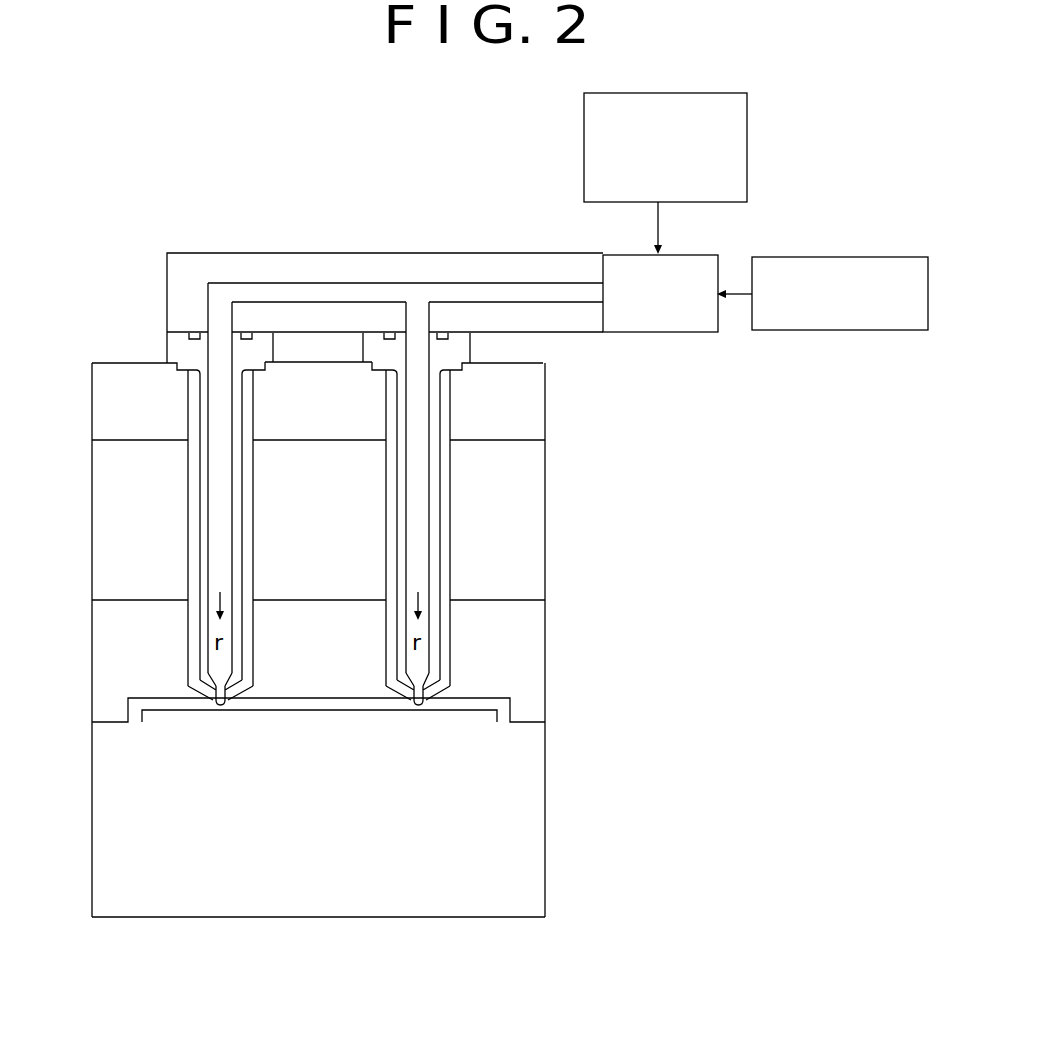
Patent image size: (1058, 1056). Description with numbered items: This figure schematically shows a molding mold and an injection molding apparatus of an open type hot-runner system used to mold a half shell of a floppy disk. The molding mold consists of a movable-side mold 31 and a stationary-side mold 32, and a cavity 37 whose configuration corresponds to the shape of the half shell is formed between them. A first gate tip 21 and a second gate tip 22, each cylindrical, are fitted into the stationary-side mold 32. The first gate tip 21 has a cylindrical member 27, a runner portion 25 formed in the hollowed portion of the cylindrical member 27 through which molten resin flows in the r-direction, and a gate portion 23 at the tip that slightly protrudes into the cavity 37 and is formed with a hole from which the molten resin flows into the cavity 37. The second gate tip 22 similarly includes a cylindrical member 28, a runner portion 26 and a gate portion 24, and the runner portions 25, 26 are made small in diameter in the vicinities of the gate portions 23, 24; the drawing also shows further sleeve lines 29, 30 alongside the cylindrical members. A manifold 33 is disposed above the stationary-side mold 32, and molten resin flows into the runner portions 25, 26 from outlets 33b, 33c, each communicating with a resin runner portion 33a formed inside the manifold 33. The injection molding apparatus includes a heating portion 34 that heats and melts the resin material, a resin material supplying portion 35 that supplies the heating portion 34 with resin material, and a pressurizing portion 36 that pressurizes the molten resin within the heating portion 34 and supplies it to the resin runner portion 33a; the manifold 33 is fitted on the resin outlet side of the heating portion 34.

The first gate tip 21 is at (182, 475).
The second gate tip 22 is at (458, 478).
The gate portion 23 is at (220, 706).
The gate portion 24 is at (415, 706).
The runner portion 25 is at (222, 407).
The runner portion 26 is at (417, 408).
The cylindrical member 27 is at (235, 517).
The cylindrical member 28 is at (433, 515).
The first outer sleeve 29 is at (250, 570).
The second outer sleeve 30 is at (443, 568).
The movable-side mold 31 is at (551, 868).
The stationary-side mold 32 is at (551, 655).
The manifold 33 is at (320, 250).
The resin runner portion 33a is at (490, 292).
The outlet 33b is at (220, 314).
The outlet 33c is at (408, 316).
The heating portion 34 is at (678, 332).
The resin material supplying portion 35 is at (747, 160).
The pressurizing portion 36 is at (860, 330).
The cavity 37 is at (476, 712).